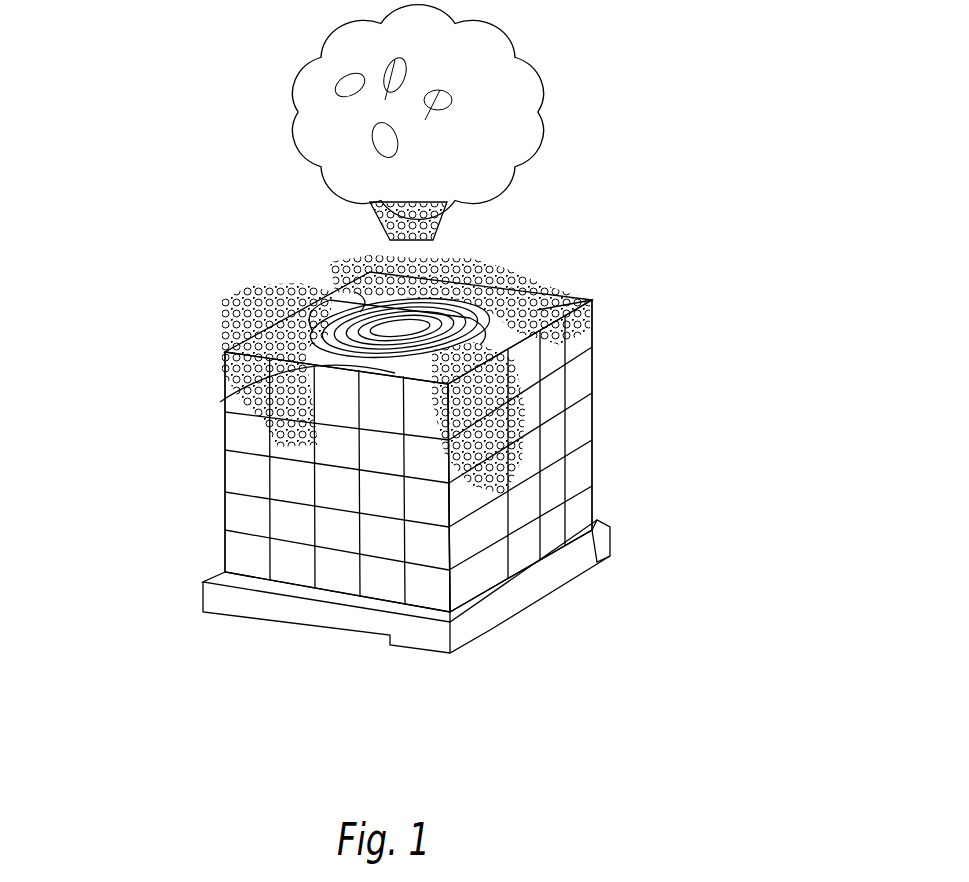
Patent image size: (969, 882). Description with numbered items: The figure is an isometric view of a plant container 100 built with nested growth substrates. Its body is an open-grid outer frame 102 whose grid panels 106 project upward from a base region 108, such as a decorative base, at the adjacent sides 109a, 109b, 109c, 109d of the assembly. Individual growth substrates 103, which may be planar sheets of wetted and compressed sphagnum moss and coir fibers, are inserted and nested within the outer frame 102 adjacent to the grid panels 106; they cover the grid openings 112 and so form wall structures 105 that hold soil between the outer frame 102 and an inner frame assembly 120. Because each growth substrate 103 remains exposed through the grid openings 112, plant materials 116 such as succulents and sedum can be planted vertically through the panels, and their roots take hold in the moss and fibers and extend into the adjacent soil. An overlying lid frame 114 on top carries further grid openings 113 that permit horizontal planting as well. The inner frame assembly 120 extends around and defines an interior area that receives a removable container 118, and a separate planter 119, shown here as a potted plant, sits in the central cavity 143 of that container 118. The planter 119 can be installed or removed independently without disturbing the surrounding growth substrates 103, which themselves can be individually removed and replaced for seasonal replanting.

The plant container 100 is at (612, 136).
The open-grid outer frame 102 is at (593, 307).
The growth substrates 103 is at (232, 405).
The wall structures 105 is at (597, 520).
The grid panels 106 is at (247, 457).
The base region 108 is at (600, 543).
The side 109a is at (572, 457).
The side 109b is at (262, 519).
The side 109c is at (270, 290).
The side 109d is at (508, 262).
The grid openings 112 is at (297, 517).
The grid openings 113 is at (343, 358).
The lid frame 114 is at (537, 310).
The plant materials 116 is at (440, 278).
The removable container 118 is at (367, 308).
The planter 119 is at (437, 203).
The inner frame assembly 120 is at (313, 332).
The central cavity 143 is at (392, 280).